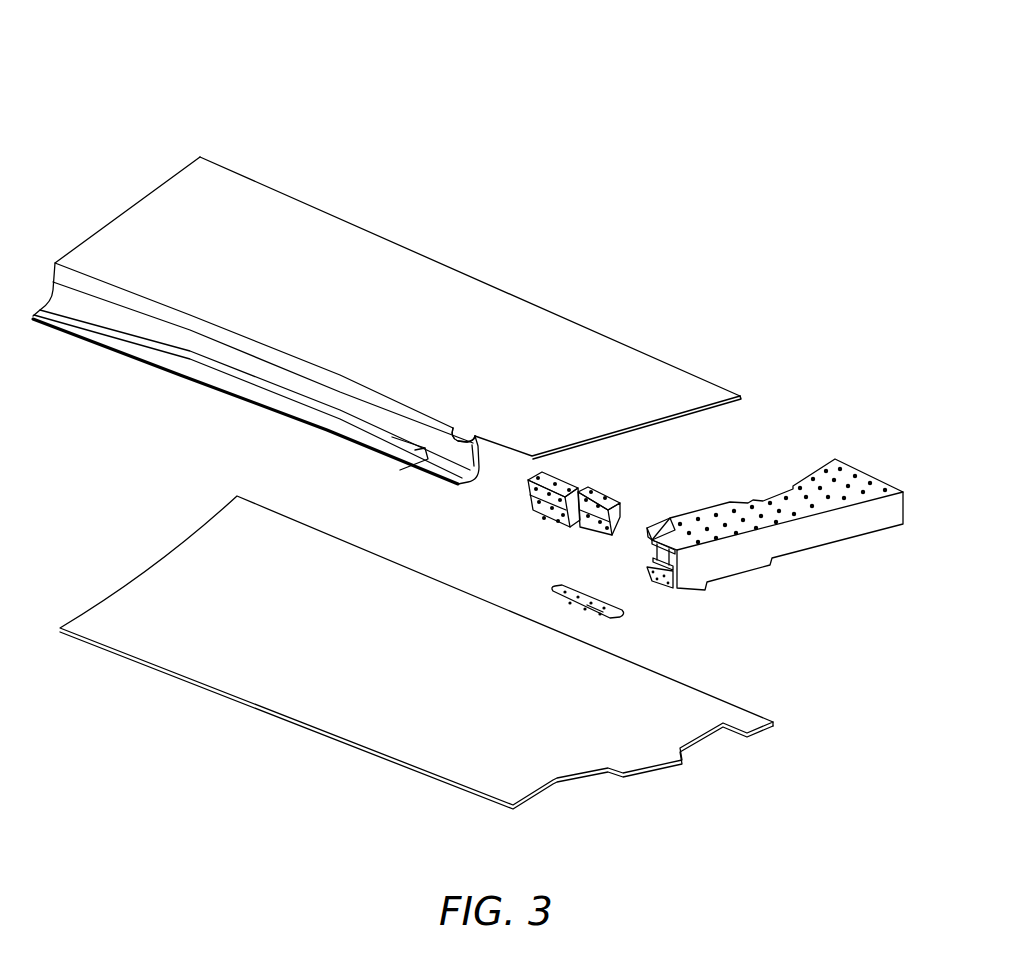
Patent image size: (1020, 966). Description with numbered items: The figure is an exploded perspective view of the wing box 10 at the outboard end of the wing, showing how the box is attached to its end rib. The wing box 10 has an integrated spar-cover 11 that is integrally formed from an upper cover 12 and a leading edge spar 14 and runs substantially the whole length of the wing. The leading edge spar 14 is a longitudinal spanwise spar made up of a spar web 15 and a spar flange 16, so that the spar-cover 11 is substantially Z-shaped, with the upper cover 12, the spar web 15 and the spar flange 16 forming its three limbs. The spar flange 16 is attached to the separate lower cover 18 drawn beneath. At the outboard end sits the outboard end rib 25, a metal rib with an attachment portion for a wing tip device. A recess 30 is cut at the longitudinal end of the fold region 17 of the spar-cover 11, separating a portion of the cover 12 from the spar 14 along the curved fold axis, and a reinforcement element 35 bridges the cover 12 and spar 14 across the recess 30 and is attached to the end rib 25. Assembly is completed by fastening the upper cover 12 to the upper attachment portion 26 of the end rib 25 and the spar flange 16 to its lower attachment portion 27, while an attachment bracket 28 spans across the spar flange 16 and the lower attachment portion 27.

The wing box 10 is at (682, 152).
The integrated spar-cover 11 is at (162, 220).
The upper cover 12 is at (272, 203).
The leading edge spar 14 is at (88, 300).
The spar web 15 is at (62, 298).
The spar flange 16 is at (110, 333).
The fold region 17 is at (73, 282).
The lower cover 18 is at (315, 690).
The outboard end rib 25 is at (823, 533).
The upper attachment portion 26 is at (733, 523).
The lower attachment portion 27 is at (640, 570).
The attachment bracket 28 is at (620, 615).
The recess 30 is at (465, 438).
The reinforcement element 35 is at (567, 485).